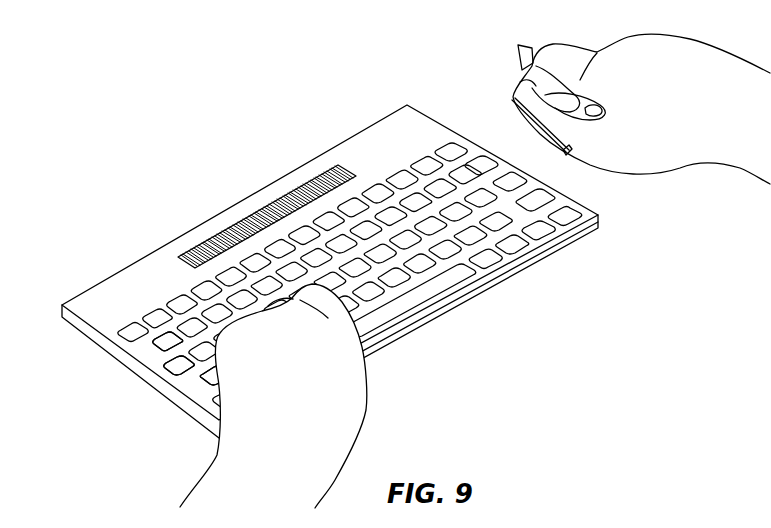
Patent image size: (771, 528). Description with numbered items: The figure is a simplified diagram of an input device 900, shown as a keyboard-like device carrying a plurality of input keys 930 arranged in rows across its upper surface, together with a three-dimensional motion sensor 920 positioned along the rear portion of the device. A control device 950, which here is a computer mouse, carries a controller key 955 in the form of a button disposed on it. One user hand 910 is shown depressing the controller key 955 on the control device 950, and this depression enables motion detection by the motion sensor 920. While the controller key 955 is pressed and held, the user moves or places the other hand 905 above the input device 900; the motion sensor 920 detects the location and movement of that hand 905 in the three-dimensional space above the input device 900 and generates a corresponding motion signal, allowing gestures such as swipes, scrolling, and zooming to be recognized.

The input device 900 is at (330, 271).
The user hand 905 is at (263, 387).
The user hand 910 is at (658, 91).
The 3-D motion sensor 920 is at (248, 220).
The input keys 930 is at (150, 347).
The control device 950 is at (535, 112).
The controller key 955 is at (527, 90).